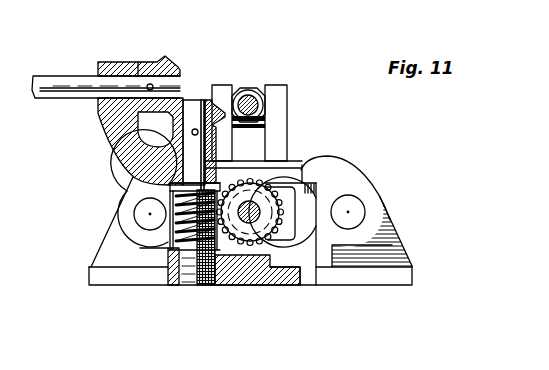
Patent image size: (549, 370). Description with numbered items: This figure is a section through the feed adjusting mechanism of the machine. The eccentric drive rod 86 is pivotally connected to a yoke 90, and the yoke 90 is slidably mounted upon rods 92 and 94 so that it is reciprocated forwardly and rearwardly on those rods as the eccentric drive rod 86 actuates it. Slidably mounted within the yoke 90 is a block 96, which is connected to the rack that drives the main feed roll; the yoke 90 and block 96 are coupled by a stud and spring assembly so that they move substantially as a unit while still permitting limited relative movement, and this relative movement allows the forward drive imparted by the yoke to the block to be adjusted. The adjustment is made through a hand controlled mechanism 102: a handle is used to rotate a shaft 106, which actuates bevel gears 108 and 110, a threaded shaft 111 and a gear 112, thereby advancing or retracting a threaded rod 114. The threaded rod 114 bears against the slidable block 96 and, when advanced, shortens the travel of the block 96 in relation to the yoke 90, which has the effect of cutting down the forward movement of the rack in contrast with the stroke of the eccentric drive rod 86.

The eccentric drive rod 86 is at (262, 103).
The yoke 90 is at (310, 162).
The rod 92 is at (145, 212).
The rod 94 is at (355, 210).
The block 96 is at (288, 217).
The hand controlled mechanism 102 is at (244, 257).
The shaft 106 is at (70, 55).
The bevel gear 108 is at (155, 62).
The bevel gear 110 is at (182, 100).
The threaded shaft 111 is at (170, 262).
The gear 112 is at (267, 248).
The threaded rod 114 is at (252, 207).